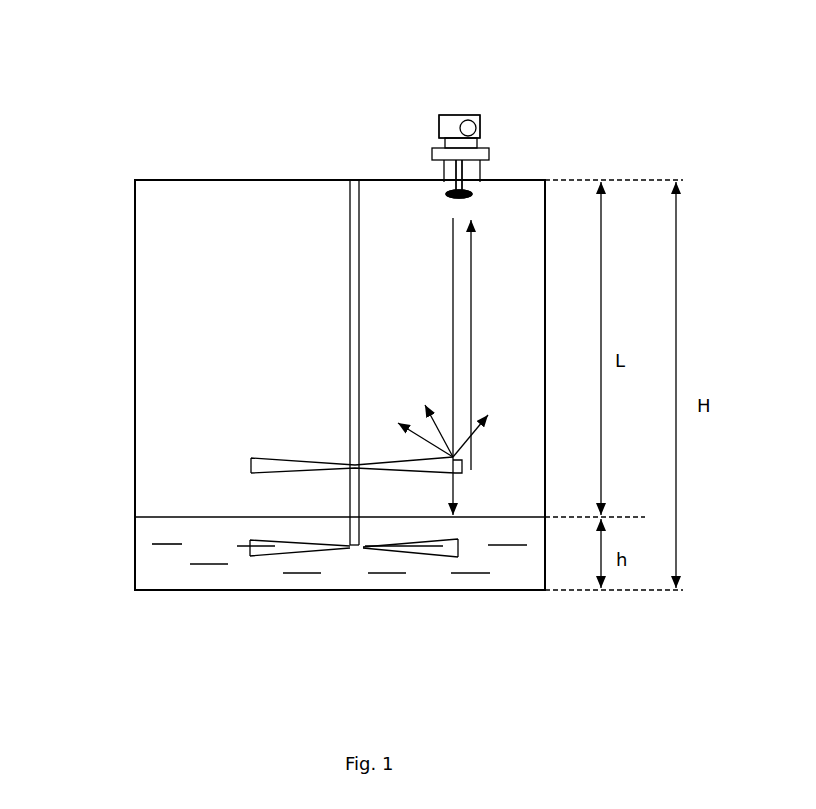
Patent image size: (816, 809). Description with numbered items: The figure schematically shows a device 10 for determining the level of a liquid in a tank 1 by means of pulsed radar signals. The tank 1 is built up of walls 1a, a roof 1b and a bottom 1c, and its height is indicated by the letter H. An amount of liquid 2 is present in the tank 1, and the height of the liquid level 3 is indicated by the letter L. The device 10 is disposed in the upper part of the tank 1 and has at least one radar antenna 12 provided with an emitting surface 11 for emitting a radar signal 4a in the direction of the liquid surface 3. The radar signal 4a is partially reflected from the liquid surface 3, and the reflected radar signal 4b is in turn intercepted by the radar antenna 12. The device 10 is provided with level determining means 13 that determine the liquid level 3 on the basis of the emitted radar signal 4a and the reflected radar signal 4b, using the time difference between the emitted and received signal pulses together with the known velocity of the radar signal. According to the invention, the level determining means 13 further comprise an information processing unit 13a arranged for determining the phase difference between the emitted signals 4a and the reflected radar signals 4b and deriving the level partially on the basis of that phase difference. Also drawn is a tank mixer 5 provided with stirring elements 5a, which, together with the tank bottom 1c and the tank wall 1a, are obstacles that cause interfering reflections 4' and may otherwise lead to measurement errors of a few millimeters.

The tank 1 is at (116, 173).
The walls 1a is at (130, 355).
The roof 1b is at (185, 178).
The bottom 1c is at (198, 596).
The liquid 2 is at (150, 563).
The liquid level 3 is at (197, 513).
The radar signal 4a is at (445, 297).
The reflected radar signal 4b is at (477, 318).
The reflections 4' is at (390, 406).
The tank mixer 5 is at (330, 283).
The stirring elements 5a is at (285, 475).
The device 10 is at (457, 106).
The emitting surface 11 is at (472, 207).
The radar antenna 12 is at (472, 187).
The level determining means 13 is at (433, 122).
The information processing unit 13a is at (479, 116).